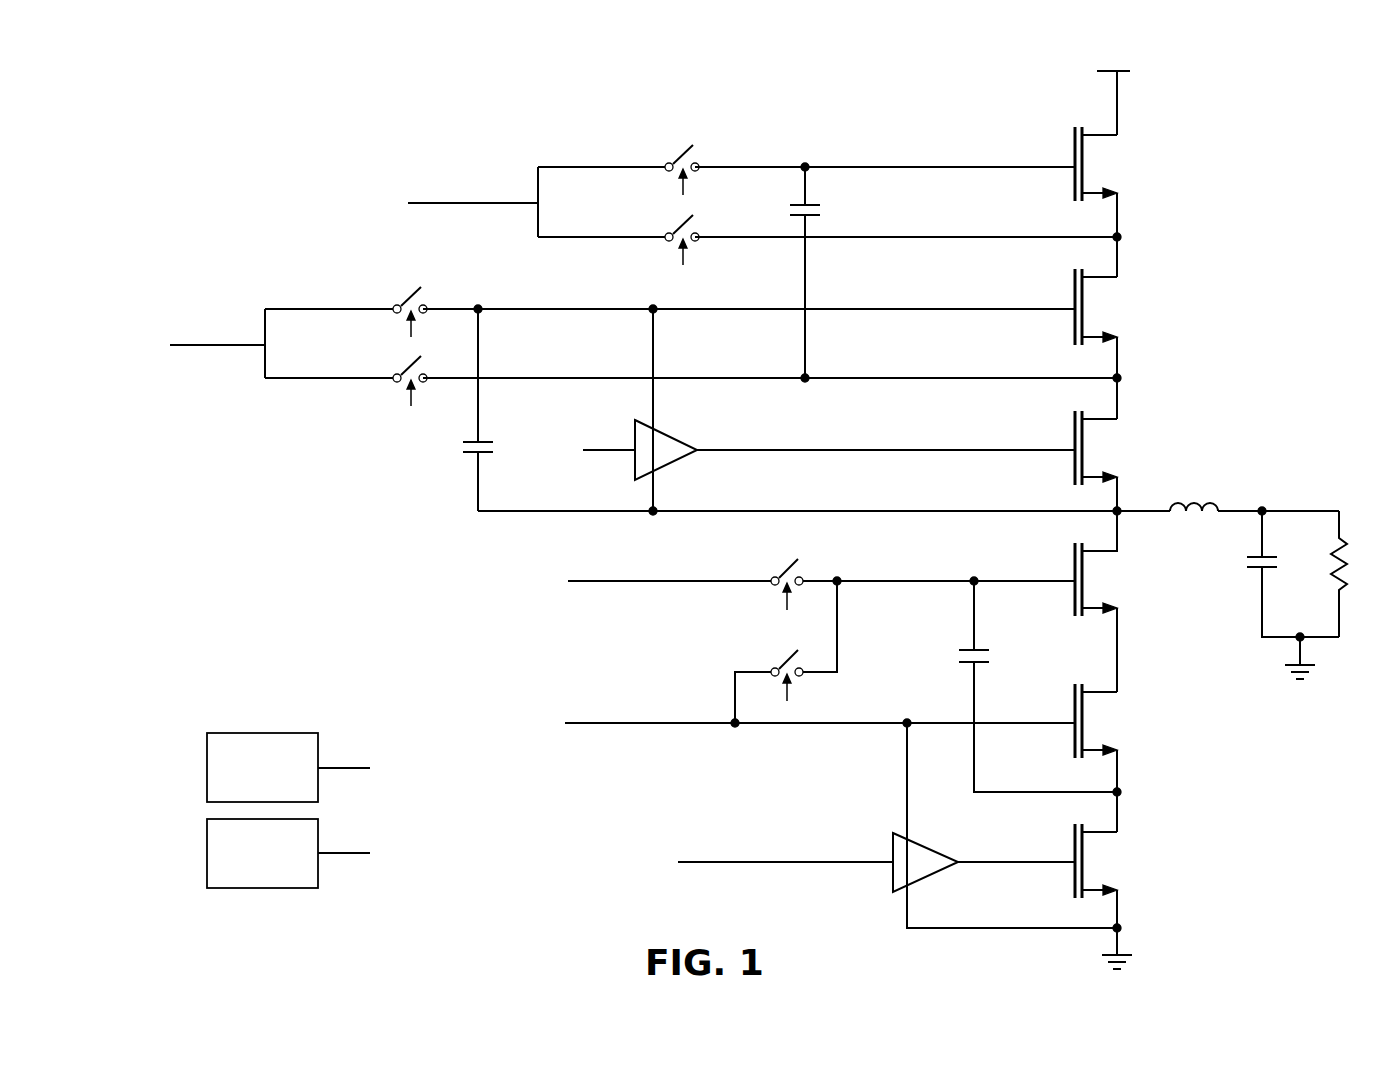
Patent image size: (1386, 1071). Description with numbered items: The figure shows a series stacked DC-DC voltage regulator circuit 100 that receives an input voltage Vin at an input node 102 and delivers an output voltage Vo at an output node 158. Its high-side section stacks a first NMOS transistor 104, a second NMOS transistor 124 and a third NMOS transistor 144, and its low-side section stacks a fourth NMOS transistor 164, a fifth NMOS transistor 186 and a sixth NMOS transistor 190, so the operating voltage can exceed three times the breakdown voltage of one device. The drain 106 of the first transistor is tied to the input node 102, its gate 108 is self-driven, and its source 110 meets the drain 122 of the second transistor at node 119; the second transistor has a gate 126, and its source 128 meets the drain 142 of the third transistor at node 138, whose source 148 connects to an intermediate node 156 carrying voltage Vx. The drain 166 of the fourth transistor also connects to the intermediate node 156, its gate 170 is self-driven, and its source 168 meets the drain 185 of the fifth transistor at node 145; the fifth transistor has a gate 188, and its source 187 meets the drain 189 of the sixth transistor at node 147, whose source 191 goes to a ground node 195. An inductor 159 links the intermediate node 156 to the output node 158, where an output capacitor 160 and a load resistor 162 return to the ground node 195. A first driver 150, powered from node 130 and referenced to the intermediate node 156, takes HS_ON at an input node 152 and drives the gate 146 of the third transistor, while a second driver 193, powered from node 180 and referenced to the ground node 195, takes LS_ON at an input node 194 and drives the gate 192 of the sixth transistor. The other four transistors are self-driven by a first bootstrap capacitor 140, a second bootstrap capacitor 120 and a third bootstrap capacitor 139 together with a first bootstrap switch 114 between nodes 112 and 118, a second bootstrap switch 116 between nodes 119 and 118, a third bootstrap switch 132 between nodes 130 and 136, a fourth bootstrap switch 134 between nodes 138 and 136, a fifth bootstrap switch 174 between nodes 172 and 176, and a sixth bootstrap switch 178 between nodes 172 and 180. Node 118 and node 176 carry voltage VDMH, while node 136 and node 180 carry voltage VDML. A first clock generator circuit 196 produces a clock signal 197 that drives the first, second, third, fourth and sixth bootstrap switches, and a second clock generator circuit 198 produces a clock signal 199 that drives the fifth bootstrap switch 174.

The series stacked DC-DC voltage regulator circuit 100 is at (225, 88).
The input node 102 is at (1100, 71).
The first NMOS transistor 104 is at (1122, 148).
The drain 106 is at (1118, 118).
The gate 108 is at (1003, 165).
The source 110 is at (1118, 215).
The node 112 is at (805, 165).
The first bootstrap switch 114 is at (670, 160).
The second bootstrap switch 116 is at (670, 230).
The node 118 is at (472, 202).
The node 119 is at (920, 236).
The second bootstrap capacitor 120 is at (822, 212).
The drain 122 is at (1118, 255).
The second NMOS transistor 124 is at (1122, 290).
The gate 126 is at (1012, 307).
The source 128 is at (1118, 355).
The node 130 is at (556, 307).
The third bootstrap switch 132 is at (399, 302).
The fourth bootstrap switch 134 is at (399, 371).
The node 136 is at (238, 344).
The node 138 is at (892, 377).
The third bootstrap capacitor 139 is at (960, 652).
The first bootstrap capacitor 140 is at (465, 455).
The drain 142 is at (1118, 398).
The third NMOS transistor 144 is at (1122, 430).
The node 145 is at (1116, 650).
The gate 146 is at (1005, 448).
The node 147 is at (1040, 790).
The source 148 is at (1118, 495).
The first driver 150 is at (660, 438).
The input node 152 is at (615, 453).
The intermediate node 156 is at (975, 510).
The output node 158 is at (1272, 508).
The inductor 159 is at (1195, 504).
The output capacitor 160 is at (1270, 557).
The load resistor 162 is at (1338, 580).
The fourth NMOS transistor 164 is at (1122, 563).
The drain 166 is at (1116, 535).
The source 168 is at (1118, 632).
The gate 170 is at (1036, 579).
The node 172 is at (845, 579).
The fifth bootstrap switch 174 is at (777, 574).
The node 176 is at (678, 580).
The sixth bootstrap switch 178 is at (778, 666).
The node 180 is at (684, 721).
The drain 185 is at (1118, 674).
The fifth NMOS transistor 186 is at (1122, 704).
The source 187 is at (1118, 774).
The gate 188 is at (1033, 721).
The drain 189 is at (1118, 814).
The sixth NMOS transistor 190 is at (1122, 852).
The source 191 is at (1118, 906).
The gate 192 is at (1034, 860).
The second driver 193 is at (905, 830).
The input node 194 is at (787, 864).
The ground node 195 is at (1102, 955).
The first clock generator circuit 196 is at (225, 732).
The clock signal 197 is at (352, 760).
The second clock generator circuit 198 is at (230, 888).
The clock signal 199 is at (348, 845).